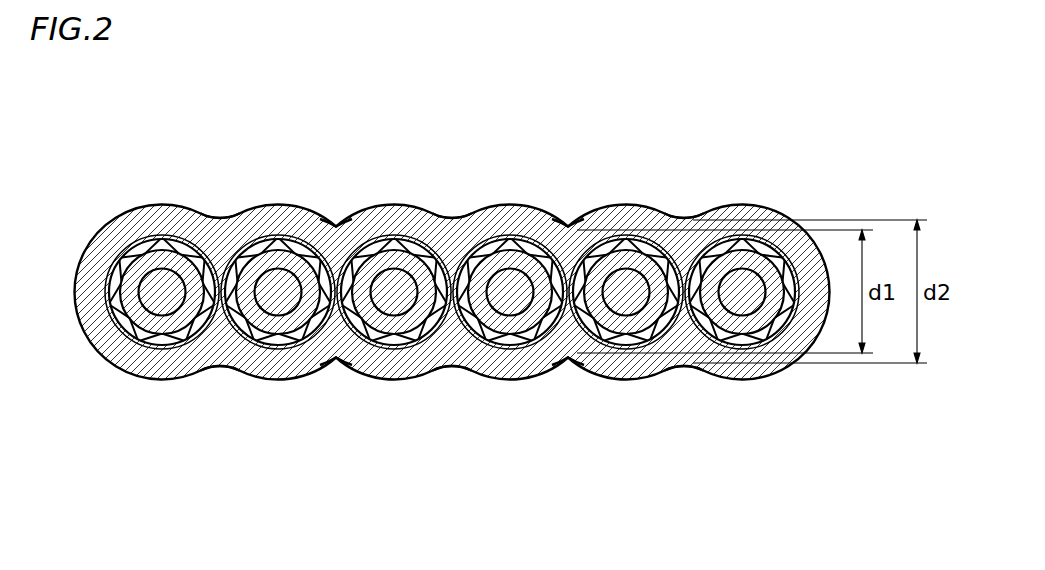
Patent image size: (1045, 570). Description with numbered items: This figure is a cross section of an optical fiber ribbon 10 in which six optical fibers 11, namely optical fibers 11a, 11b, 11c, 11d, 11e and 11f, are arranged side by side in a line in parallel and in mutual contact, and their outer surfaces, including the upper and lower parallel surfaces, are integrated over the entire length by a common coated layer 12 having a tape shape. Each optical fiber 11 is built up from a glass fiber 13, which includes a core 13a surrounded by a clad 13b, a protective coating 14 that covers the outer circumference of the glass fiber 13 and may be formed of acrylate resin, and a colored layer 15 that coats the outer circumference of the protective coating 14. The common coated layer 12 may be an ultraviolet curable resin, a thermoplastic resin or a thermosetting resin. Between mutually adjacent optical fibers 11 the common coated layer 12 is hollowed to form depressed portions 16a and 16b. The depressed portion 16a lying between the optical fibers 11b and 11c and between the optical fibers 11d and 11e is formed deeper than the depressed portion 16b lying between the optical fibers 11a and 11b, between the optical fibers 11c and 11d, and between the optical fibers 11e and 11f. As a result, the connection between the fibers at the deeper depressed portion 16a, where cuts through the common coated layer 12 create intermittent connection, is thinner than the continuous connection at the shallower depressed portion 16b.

The optical fiber ribbon 10 is at (666, 144).
The optical fibers 11 is at (145, 449).
The optical fiber 11a is at (163, 352).
The optical fiber 11b is at (278, 352).
The optical fiber 11c is at (394, 352).
The optical fiber 11d is at (510, 352).
The optical fiber 11e is at (626, 352).
The optical fiber 11f is at (738, 352).
The common coated layer 12 is at (147, 377).
The glass fiber 13 is at (160, 173).
The core 13a is at (161, 278).
The clad 13b is at (140, 262).
The protective coating 14 is at (108, 293).
The colored layer 15 is at (118, 328).
The inter-optical-fiber depressed portion 16a is at (335, 225).
The inter-optical-fiber depressed portion 16b is at (220, 216).